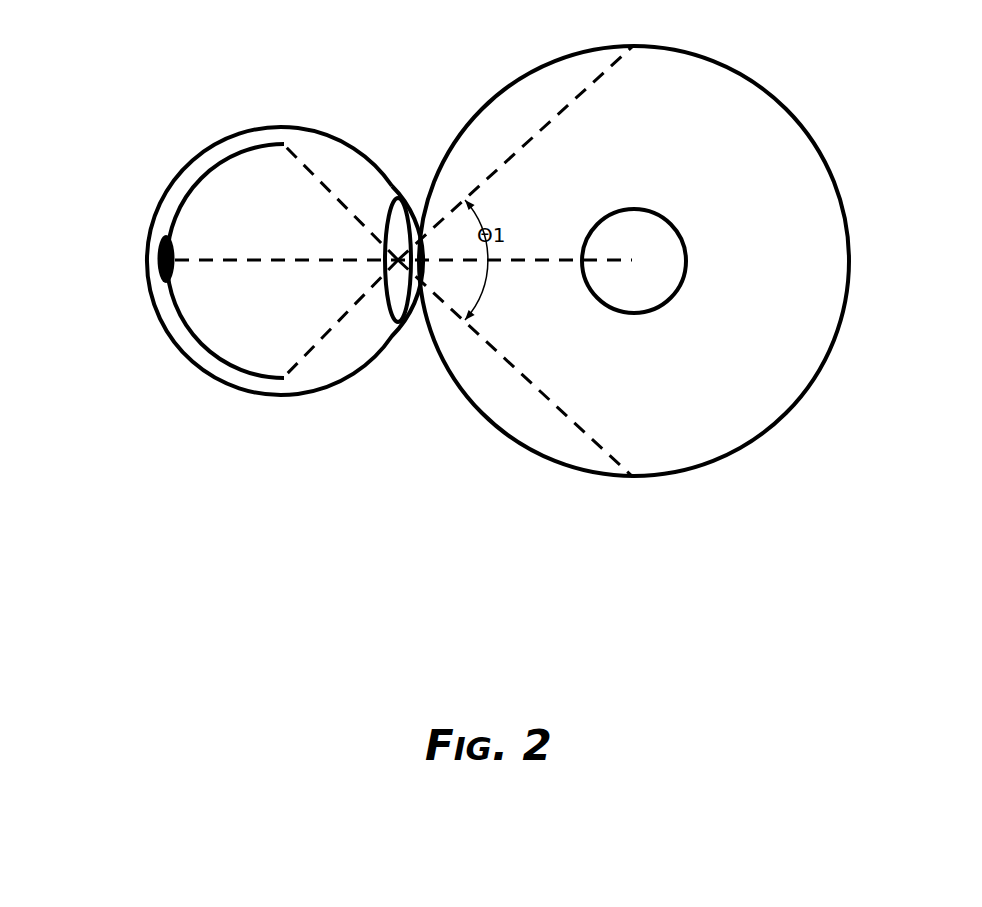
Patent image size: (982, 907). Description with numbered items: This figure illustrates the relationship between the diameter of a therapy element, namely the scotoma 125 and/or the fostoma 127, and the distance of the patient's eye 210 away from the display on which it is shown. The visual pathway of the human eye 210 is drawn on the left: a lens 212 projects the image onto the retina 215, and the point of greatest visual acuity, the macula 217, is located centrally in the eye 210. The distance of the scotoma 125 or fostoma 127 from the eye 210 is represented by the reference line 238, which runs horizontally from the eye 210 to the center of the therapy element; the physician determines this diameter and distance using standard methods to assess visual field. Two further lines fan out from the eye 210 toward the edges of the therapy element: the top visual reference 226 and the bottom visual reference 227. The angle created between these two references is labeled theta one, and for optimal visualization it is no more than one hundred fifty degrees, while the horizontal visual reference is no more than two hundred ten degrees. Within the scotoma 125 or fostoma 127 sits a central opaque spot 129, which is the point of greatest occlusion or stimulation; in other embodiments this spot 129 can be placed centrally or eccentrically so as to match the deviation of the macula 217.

The eye 210 is at (353, 373).
The lens 212 is at (383, 230).
The retina 215 is at (250, 361).
The macula 217 is at (157, 272).
The top visual reference 226 is at (588, 85).
The bottom visual reference 227 is at (600, 448).
The reference line 238 is at (507, 260).
The scotoma 125 is at (661, 274).
The fostoma 127 is at (725, 457).
The central opaque spot 129 is at (667, 300).